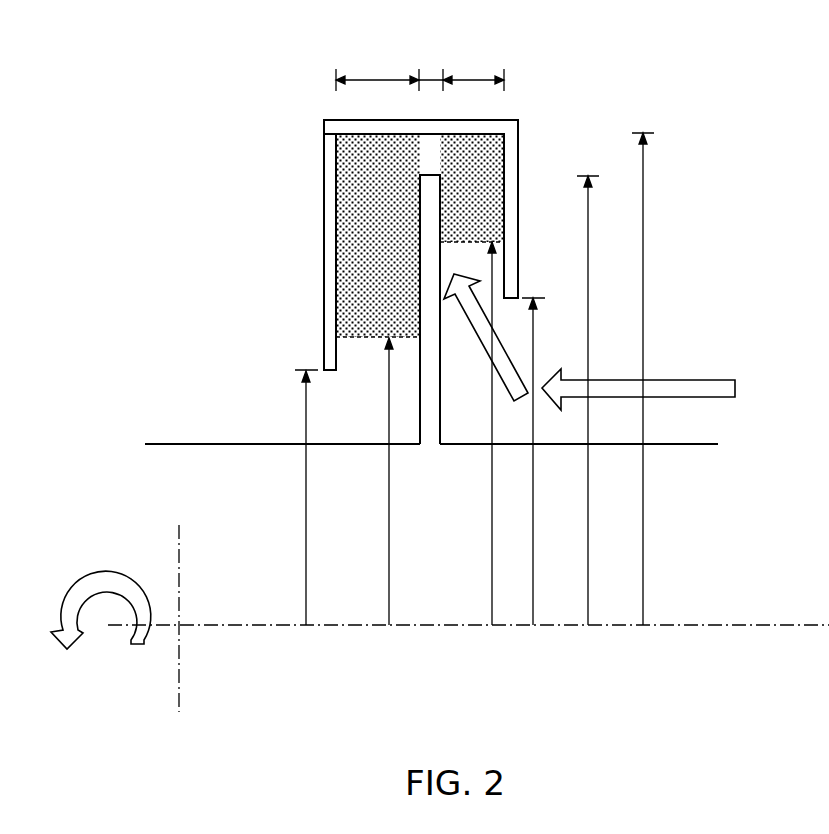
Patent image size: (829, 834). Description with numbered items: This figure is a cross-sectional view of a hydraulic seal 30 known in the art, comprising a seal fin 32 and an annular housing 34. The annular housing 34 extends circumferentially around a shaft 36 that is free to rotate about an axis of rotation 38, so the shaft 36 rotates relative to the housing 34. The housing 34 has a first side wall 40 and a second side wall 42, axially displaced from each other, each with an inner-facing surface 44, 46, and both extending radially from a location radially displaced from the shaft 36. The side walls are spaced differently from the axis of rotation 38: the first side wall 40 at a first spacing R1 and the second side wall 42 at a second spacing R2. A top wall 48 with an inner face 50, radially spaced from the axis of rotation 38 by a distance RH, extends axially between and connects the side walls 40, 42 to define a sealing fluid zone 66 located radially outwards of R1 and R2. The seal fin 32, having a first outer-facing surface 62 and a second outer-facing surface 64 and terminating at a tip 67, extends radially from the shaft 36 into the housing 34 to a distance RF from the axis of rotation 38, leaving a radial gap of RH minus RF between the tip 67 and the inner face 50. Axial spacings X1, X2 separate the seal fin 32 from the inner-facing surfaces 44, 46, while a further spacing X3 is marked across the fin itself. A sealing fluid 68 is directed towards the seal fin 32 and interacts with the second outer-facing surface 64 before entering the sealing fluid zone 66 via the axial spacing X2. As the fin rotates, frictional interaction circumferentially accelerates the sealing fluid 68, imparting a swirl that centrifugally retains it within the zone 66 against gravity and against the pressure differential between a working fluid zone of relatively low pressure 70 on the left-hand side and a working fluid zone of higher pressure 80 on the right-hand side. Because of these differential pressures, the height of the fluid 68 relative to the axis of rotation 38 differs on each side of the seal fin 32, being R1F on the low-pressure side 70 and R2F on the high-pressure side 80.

The hydraulic seal 30 is at (272, 183).
The seal fin 32 is at (338, 147).
The annular housing 34 is at (330, 229).
The shaft 36 is at (217, 443).
The axis of rotation 38 is at (250, 625).
The first side wall 40 is at (322, 320).
The second side wall 42 is at (520, 145).
The inner-facing surface of first side wall 44 is at (330, 270).
The inner-facing surface of second side wall 46 is at (504, 210).
The top wall 48 is at (507, 121).
The inner face 50 is at (338, 123).
The first outer-facing surface 62 is at (418, 416).
The second outer-facing surface 64 is at (439, 409).
The sealing fluid zone 66 is at (370, 216).
The tip 67 is at (432, 175).
The sealing fluid 68 is at (513, 365).
The working fluid zone of relatively low pressure 70 is at (112, 226).
The working fluid zone of higher pressure 80 is at (730, 225).
The axial spacing X1 is at (383, 78).
The axial spacing X2 is at (473, 78).
The third width dimension X3 is at (432, 78).
The first spacing R1 is at (306, 612).
The fluid height on low-pressure side R1F is at (389, 612).
The second spacing R2 is at (533, 612).
The fluid height on high-pressure side R2F is at (492, 603).
The seal fin radial extent RF is at (588, 607).
The inner face radial distance RH is at (643, 580).